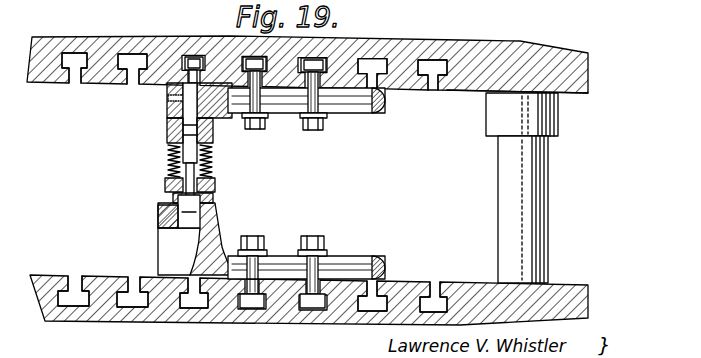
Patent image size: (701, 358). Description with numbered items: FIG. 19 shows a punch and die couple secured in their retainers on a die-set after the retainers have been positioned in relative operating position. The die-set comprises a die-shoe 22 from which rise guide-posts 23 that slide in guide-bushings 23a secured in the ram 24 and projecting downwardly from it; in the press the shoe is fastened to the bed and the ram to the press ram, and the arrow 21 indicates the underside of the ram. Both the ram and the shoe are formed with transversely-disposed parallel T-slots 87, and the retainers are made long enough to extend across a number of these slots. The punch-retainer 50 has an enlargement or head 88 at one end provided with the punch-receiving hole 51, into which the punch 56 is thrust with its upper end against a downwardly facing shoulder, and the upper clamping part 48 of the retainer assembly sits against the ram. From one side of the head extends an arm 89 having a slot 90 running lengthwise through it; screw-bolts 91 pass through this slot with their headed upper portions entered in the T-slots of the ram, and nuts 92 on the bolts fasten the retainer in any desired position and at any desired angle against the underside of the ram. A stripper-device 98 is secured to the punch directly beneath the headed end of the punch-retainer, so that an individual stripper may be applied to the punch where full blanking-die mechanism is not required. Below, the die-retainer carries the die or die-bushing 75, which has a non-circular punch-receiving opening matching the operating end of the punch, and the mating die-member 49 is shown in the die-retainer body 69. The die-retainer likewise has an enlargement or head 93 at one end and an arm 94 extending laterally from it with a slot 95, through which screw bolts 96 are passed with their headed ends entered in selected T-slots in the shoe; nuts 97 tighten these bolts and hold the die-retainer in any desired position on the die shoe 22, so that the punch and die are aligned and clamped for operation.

The under surface of upper platen 21 is at (469, 92).
The die-shoe 22 is at (307, 164).
The guide-post 23 is at (498, 198).
The guide-bushing 23a is at (537, 118).
The ram 24 is at (489, 58).
The upper mounting block 48 is at (172, 115).
The die-member 49 is at (159, 218).
The punch-retainer 50 is at (168, 117).
The punch-receiving hole 51 is at (170, 110).
The punch 56 is at (192, 157).
The lower die body 69 is at (202, 232).
The die-bushing 75 is at (213, 192).
The T-slots 87 is at (438, 62).
The head 88 is at (170, 128).
The arm 89 is at (306, 115).
The slot 90 is at (292, 103).
The screw-bolts 91 is at (248, 57).
The nuts 92 is at (262, 124).
The head 93 is at (218, 214).
The arm 94 is at (325, 246).
The slot 95 is at (364, 261).
The screw bolts 96 is at (268, 270).
The nuts 97 is at (253, 241).
The stripper-device 98 is at (168, 168).